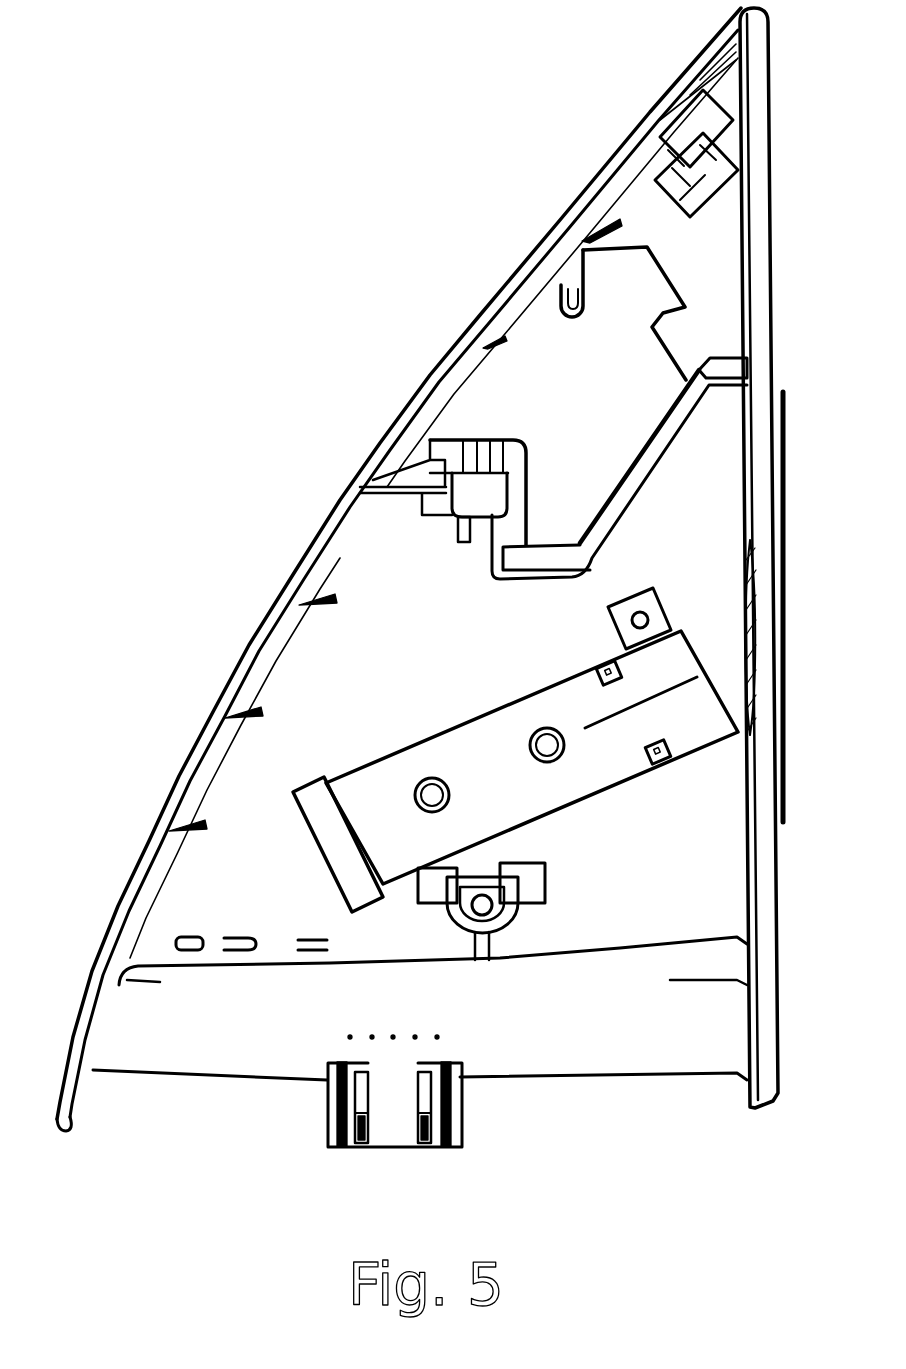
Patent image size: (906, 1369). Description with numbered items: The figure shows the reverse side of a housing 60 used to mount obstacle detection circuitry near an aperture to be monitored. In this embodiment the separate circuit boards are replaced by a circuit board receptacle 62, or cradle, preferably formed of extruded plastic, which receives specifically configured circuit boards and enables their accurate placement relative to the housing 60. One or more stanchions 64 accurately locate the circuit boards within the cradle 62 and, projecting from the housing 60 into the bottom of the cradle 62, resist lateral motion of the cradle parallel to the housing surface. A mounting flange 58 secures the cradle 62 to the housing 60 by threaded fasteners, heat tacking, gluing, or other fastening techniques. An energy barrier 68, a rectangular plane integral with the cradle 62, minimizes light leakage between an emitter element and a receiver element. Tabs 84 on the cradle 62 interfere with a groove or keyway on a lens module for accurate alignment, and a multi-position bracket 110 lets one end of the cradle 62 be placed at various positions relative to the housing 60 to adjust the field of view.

The mounting flange 58 is at (640, 606).
The housing 60 is at (272, 600).
The circuit board receptacle 62 is at (452, 753).
The stanchion 64 is at (410, 789).
The energy barrier 68 is at (588, 728).
The tab 84 is at (606, 664).
The multi-position bracket 110 is at (330, 862).